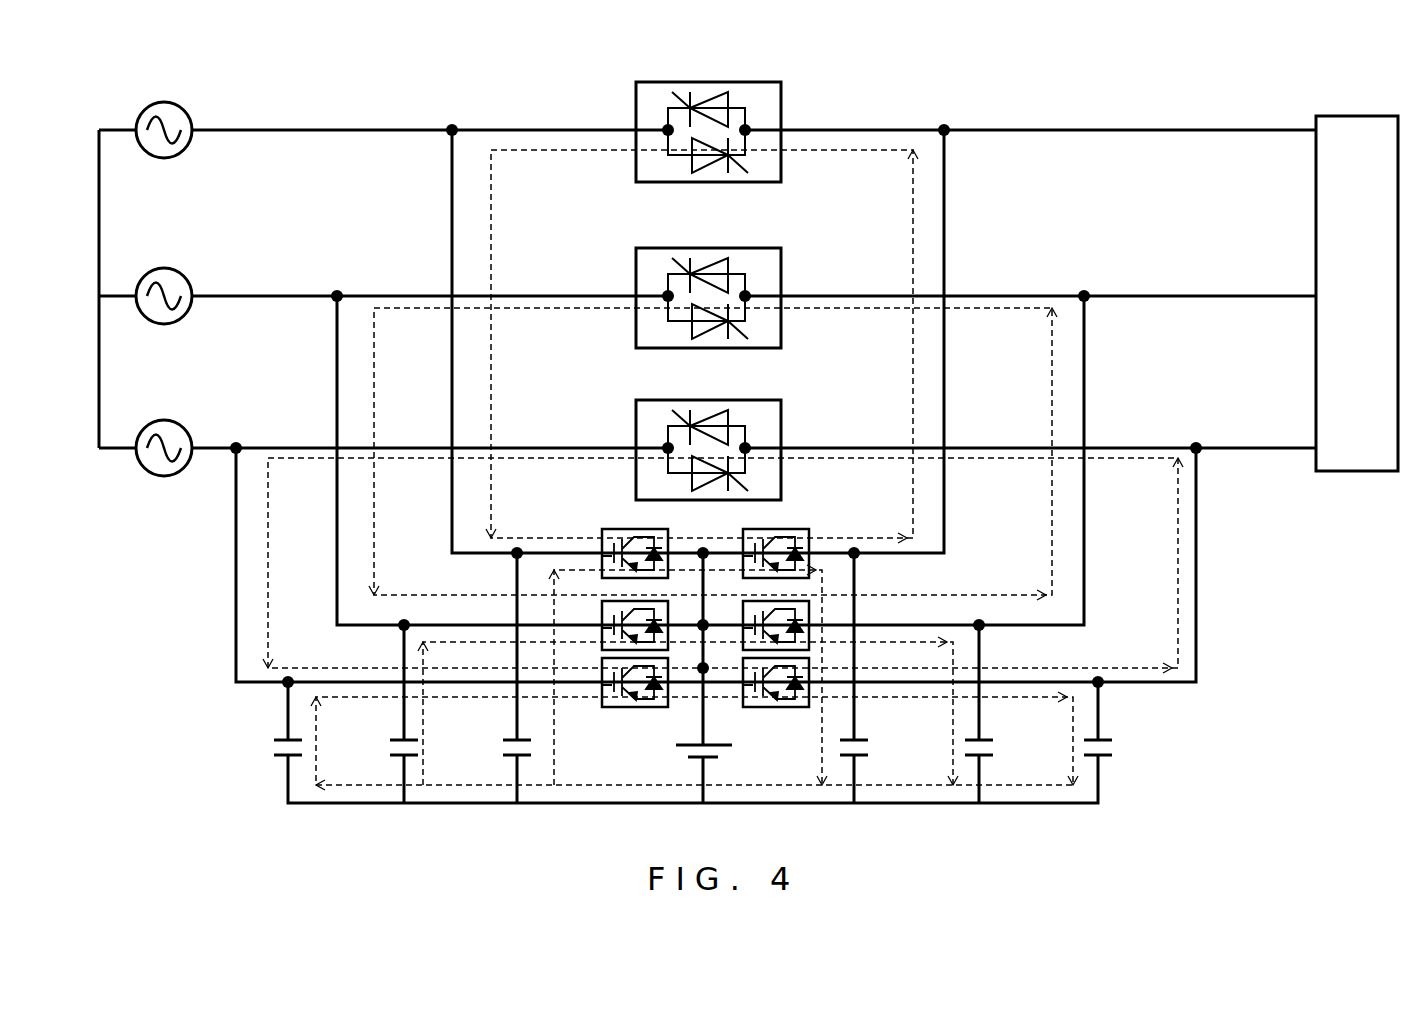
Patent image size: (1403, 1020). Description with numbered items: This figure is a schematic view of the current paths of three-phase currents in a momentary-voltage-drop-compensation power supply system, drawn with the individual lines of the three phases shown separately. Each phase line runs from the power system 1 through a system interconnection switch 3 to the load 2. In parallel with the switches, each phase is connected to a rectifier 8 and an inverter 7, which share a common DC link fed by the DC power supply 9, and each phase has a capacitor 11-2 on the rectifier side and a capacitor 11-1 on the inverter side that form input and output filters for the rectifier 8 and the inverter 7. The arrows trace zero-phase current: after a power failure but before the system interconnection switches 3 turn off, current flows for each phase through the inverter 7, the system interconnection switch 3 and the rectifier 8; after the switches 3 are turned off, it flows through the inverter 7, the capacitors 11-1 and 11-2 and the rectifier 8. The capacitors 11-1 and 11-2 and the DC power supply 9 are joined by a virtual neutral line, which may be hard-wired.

The power system 1 is at (143, 111).
The load 2 is at (1336, 116).
The system interconnection switch 3 is at (636, 99).
The inverter 7 is at (774, 530).
The rectifier 8 is at (631, 529).
The DC power supply 9 is at (718, 757).
The capacitor 11-1 is at (868, 740).
The capacitor 11-2 is at (274, 740).